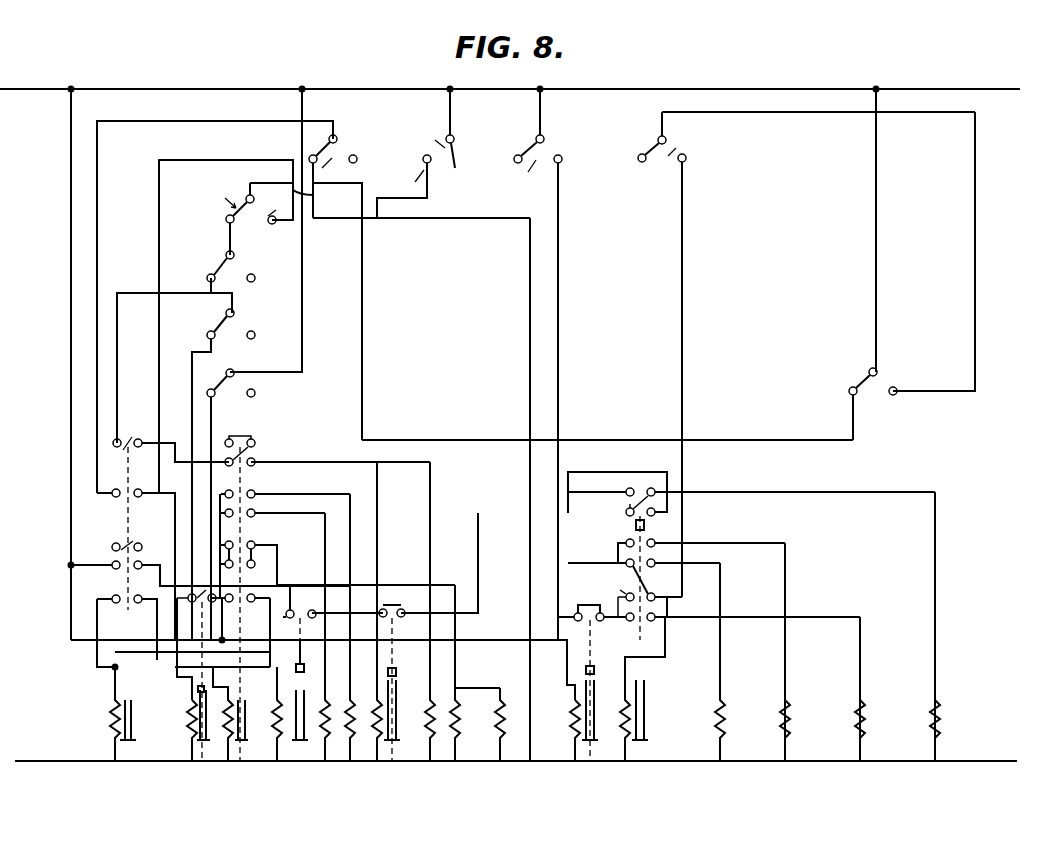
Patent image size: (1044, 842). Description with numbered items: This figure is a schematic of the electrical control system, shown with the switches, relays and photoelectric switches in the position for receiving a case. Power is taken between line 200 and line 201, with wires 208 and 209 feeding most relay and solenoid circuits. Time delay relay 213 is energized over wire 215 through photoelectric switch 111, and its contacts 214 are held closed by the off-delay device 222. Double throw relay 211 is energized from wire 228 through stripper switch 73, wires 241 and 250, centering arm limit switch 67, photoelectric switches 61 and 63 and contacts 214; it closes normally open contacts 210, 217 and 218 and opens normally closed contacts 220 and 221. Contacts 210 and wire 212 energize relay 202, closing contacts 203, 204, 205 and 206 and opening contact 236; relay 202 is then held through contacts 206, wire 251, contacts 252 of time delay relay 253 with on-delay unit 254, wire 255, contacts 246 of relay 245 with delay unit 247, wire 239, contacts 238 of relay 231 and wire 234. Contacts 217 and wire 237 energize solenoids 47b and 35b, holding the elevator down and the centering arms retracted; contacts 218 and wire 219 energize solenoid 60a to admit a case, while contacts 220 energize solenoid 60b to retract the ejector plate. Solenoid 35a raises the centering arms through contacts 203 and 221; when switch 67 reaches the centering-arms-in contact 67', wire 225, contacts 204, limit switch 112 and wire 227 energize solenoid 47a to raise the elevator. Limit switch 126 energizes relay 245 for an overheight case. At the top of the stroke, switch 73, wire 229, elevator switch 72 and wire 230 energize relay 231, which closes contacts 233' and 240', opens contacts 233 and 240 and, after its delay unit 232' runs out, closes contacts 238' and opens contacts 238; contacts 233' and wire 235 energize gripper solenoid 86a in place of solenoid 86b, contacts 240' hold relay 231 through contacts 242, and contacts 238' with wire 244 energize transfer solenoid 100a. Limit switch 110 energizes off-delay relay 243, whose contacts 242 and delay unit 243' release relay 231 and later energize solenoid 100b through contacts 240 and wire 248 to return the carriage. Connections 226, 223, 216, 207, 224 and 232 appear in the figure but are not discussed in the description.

The line 200 is at (605, 89).
The wire 208 is at (71, 258).
The wire 209 is at (71, 645).
The conductor 226 is at (97, 258).
The wire 215 is at (302, 270).
The wire 225 is at (159, 200).
The conductor 223 is at (117, 300).
The centering arm limit switch 67 is at (225, 216).
The centering arms in contact 67' is at (274, 202).
The photoelectric switch 61 is at (225, 262).
The photoelectric switch 63 is at (224, 314).
The photoelectric switch 111 is at (228, 372).
The limit switch 112 is at (333, 142).
The limit switch 126 is at (452, 146).
The limit switch 110 is at (542, 142).
The elevator limit switch 72 is at (656, 150).
The stripper switch 73 is at (866, 383).
The wire 228 is at (876, 252).
The wire 229 is at (975, 254).
The wire 230 is at (682, 251).
The wire 241 is at (782, 440).
The wire 227 is at (463, 222).
The wire 250 is at (362, 385).
The contacts 203 is at (132, 438).
The contacts 204 is at (116, 498).
The contacts 205 is at (116, 543).
The contact 236 is at (120, 570).
The conductor 216 is at (175, 558).
The contacts 206 is at (112, 604).
The wire 251 is at (140, 652).
The conductor 207 is at (120, 650).
The relay 202 is at (112, 718).
The wire 212 is at (150, 662).
The time delay device 222 is at (190, 694).
The time delay relay 213 is at (195, 725).
The double throw relay 211 is at (220, 730).
The time delay relay 253 is at (288, 722).
The line 201 is at (290, 762).
The time delay unit 254 is at (296, 668).
The solenoid 60b is at (325, 765).
The solenoid 60a is at (352, 745).
The time delay relay 245 is at (377, 760).
The delay unit 247 is at (410, 668).
The solenoid coil 35a is at (430, 755).
The conductor 224 is at (430, 502).
The wire 219 is at (352, 468).
The solenoid coil 47b is at (500, 722).
The solenoid coil 35b is at (477, 723).
The solenoid 47a is at (520, 745).
The wire 239 is at (475, 580).
The wire 237 is at (454, 574).
The wire 255 is at (340, 605).
The contacts 221 is at (255, 460).
The contacts 218 is at (255, 498).
The contacts 220 is at (255, 517).
The contacts 217 is at (255, 541).
The contacts 210 is at (240, 604).
The contacts 214 is at (207, 594).
The contacts 252 is at (291, 606).
The contacts 246 is at (420, 598).
The contacts 238 is at (751, 492).
The contacts 238' is at (645, 543).
The time delay unit 232' is at (690, 521).
The contacts 233' is at (678, 543).
The contacts 233 is at (644, 588).
The contacts 240' is at (599, 592).
The contacts 242 is at (592, 674).
The contacts 240 is at (743, 592).
The wire 234 is at (568, 640).
The time delay unit 243' is at (606, 695).
The off delay relay 243 is at (562, 747).
The relay 231 is at (625, 735).
The relay 232 is at (681, 646).
The wire 235 is at (785, 580).
The wire 244 is at (935, 553).
The wire 248 is at (860, 654).
The solenoid 86b is at (760, 708).
The solenoid 86a is at (790, 724).
The solenoid coil 100b is at (862, 724).
The solenoid 100a is at (940, 718).